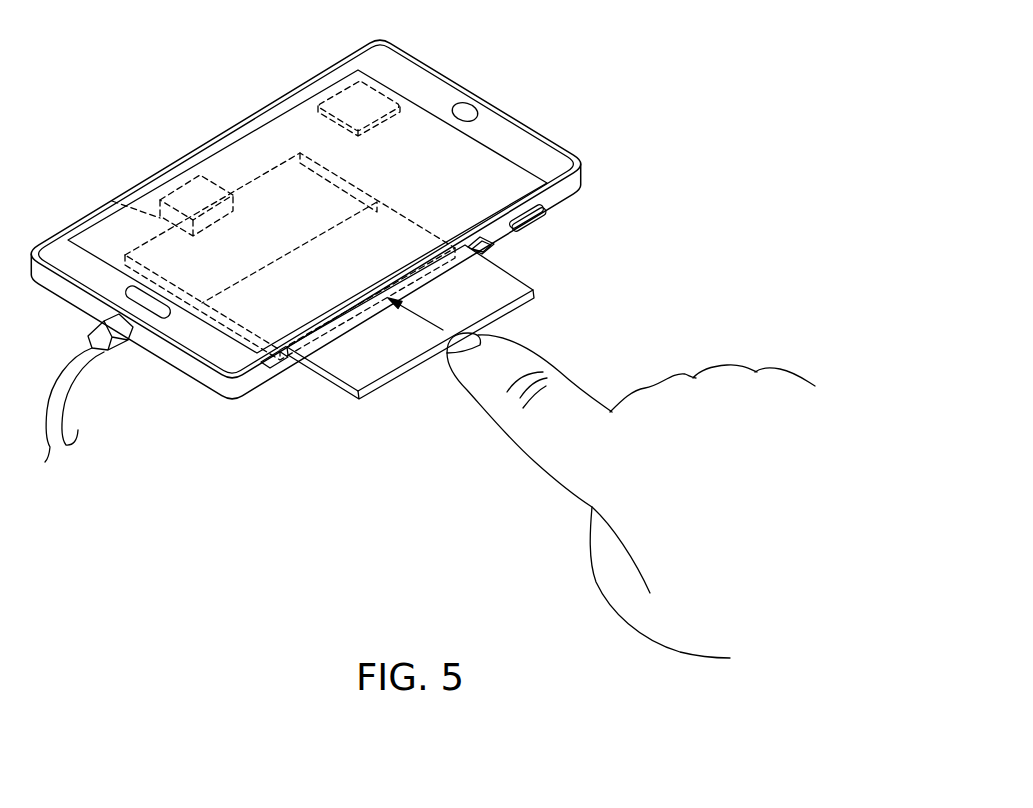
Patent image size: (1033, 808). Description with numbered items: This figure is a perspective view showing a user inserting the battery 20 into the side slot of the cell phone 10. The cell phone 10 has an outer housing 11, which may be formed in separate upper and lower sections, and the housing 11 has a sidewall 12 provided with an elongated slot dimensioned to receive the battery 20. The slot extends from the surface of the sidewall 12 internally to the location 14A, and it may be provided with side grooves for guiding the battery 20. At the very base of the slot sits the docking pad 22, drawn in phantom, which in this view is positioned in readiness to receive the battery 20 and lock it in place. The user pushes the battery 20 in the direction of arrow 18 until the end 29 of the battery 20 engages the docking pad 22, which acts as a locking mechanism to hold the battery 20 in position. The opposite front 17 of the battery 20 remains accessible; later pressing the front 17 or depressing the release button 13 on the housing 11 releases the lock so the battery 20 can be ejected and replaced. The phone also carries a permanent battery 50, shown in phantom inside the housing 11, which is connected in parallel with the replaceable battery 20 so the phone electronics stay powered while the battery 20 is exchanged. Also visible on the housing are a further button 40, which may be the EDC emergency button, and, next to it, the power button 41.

The cell phone 10 is at (198, 125).
The outer housing 11 is at (528, 148).
The sidewall 12 is at (553, 203).
The release button 13 is at (273, 370).
The location 14A is at (261, 176).
The front 17 is at (434, 322).
The arrow 18 is at (420, 325).
The battery 20 is at (349, 354).
The docking pad 22 is at (197, 190).
The end 29 is at (112, 201).
The button 40 is at (491, 246).
The power button 41 is at (525, 218).
The permanent battery 50 is at (335, 98).